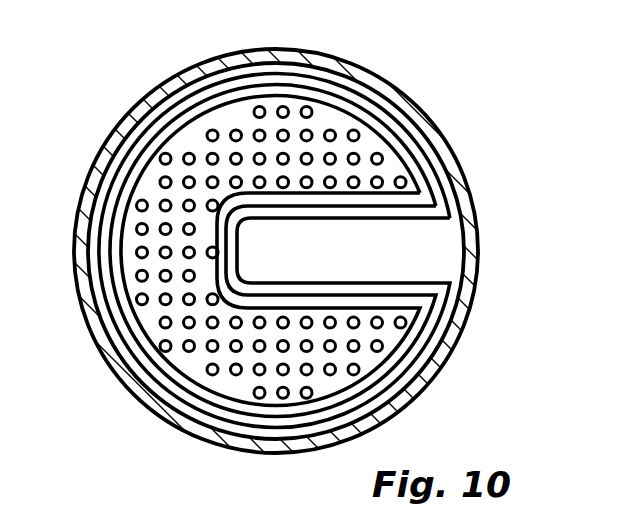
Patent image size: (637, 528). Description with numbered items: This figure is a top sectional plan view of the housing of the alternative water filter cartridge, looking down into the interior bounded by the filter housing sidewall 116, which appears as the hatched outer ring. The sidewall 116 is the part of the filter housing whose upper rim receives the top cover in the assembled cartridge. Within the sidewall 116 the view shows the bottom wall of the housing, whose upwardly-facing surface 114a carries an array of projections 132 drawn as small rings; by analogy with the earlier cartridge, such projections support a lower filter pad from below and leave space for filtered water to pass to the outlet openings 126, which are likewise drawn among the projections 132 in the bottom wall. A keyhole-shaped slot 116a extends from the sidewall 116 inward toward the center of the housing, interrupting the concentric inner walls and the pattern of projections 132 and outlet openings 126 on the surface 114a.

The filter housing sidewall 116 is at (73, 230).
The slot 116a is at (447, 247).
The plate surface 114a is at (243, 112).
The holes 126 is at (189, 172).
The openings 132 is at (307, 106).